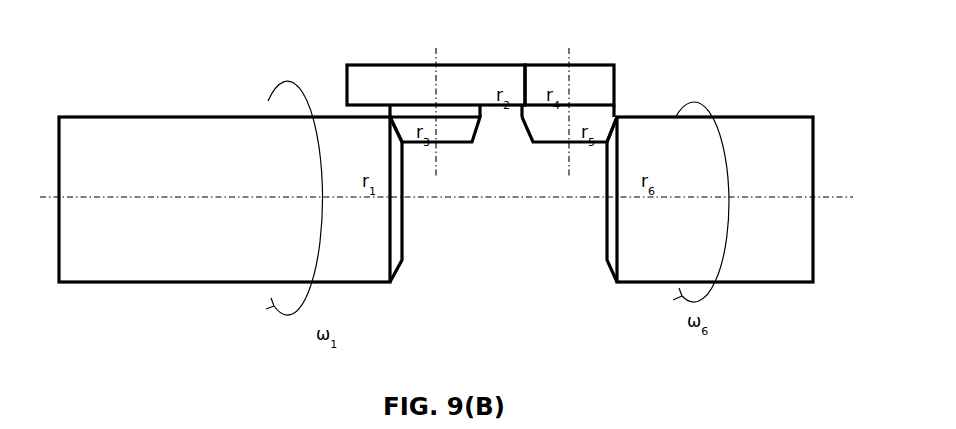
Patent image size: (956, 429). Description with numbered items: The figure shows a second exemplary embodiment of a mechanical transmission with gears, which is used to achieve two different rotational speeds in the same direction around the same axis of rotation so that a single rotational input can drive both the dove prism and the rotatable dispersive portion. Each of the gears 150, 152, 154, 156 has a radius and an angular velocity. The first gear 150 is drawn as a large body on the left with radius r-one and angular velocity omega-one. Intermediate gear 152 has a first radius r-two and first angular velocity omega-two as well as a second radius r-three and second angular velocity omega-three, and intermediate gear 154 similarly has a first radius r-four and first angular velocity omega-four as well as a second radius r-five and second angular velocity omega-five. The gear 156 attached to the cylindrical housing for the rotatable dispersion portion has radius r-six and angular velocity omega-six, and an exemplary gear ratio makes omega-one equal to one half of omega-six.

The gear 150 is at (230, 199).
The intermediate gear 152 is at (436, 103).
The intermediate gear 154 is at (613, 81).
The gear attached to cylindrical housing for rotatable dispersion portion 156 is at (710, 199).